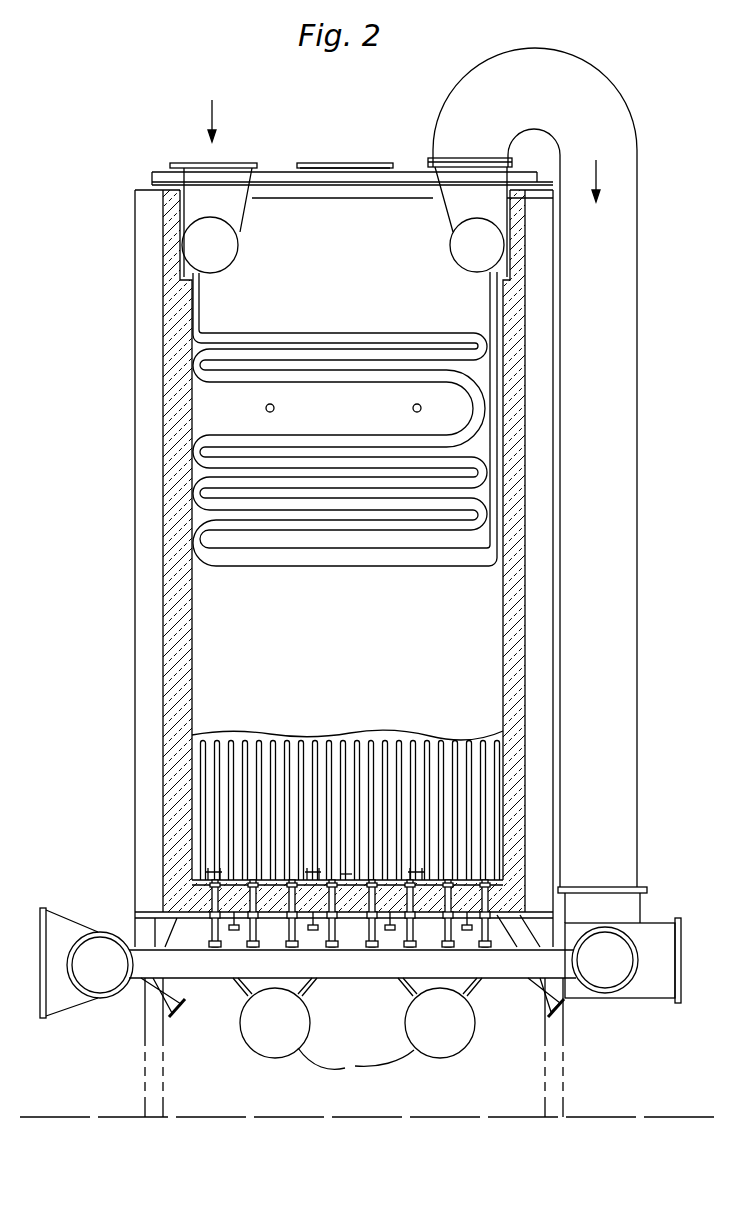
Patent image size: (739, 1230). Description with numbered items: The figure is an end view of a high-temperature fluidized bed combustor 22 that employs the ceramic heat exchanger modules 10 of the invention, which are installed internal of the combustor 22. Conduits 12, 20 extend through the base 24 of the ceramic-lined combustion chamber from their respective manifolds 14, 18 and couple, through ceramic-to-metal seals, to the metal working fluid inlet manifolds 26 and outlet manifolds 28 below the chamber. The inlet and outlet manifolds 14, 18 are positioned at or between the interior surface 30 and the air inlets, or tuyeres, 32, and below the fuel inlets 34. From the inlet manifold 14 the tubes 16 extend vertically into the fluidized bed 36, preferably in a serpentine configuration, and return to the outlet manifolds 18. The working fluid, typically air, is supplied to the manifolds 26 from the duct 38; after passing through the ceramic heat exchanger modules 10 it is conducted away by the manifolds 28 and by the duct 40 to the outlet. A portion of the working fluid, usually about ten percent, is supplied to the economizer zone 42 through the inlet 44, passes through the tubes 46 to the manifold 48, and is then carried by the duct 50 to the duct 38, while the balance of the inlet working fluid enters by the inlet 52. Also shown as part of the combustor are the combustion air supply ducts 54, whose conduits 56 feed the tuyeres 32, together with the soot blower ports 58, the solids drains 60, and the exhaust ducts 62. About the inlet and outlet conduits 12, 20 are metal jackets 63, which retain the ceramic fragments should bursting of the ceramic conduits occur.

The ceramic heat exchanger module 10 is at (350, 780).
The conduit 12 is at (350, 913).
The inlet manifold 14 is at (346, 881).
The tube 16 is at (288, 797).
The outlet manifold 18 is at (492, 890).
The conduit 20 is at (496, 905).
The fluidized bed combustor 22 is at (164, 639).
The base 24 is at (410, 905).
The working fluid inlet manifold 26 is at (419, 1012).
The outlet manifold 28 is at (203, 965).
The interior surface 30 is at (202, 887).
The tuyere 32 is at (212, 876).
The fuel inlet 34 is at (313, 869).
The fluidized bed 36 is at (346, 735).
The duct 38 is at (602, 980).
The duct 40 is at (118, 998).
The economizer zone 42 is at (192, 452).
The inlet 44 is at (190, 180).
The tube 46 is at (190, 378).
The manifold 48 is at (469, 255).
The duct 50 is at (610, 133).
The inlet 52 is at (652, 938).
The combustion air supply duct 54 is at (356, 1064).
The conduit 56 is at (345, 1012).
The soot blower port 58 is at (276, 407).
The solids drain 60 is at (172, 1013).
The exhaust duct 62 is at (346, 164).
The metal jacket 63 is at (450, 933).